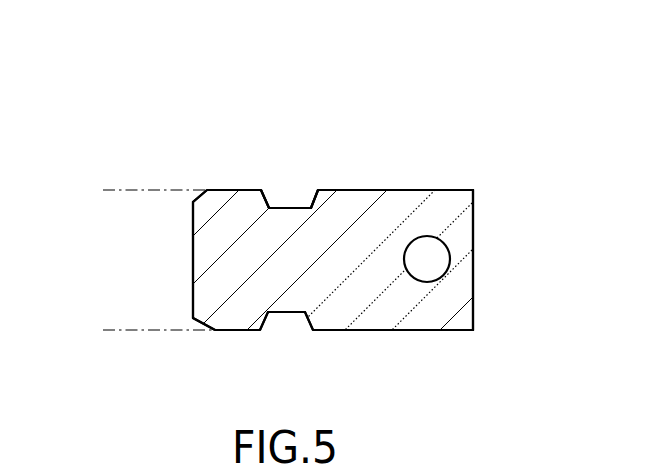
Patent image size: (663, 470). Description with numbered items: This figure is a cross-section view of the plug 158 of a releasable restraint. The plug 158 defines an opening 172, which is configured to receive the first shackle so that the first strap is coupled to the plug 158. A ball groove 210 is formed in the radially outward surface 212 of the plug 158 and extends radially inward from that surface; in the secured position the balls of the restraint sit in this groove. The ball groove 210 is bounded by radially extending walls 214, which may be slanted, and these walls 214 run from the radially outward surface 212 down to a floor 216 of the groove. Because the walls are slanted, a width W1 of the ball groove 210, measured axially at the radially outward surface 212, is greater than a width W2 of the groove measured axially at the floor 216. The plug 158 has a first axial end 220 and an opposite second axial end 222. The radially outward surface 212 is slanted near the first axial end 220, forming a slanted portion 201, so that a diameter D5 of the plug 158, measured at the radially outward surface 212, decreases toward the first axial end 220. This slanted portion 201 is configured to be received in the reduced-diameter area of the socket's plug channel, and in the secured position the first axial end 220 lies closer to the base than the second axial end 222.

The plug 158 is at (176, 97).
The ball groove 210 is at (282, 162).
The radially extending walls 214 is at (271, 192).
The floor 216 is at (283, 208).
The first axial end 220 is at (193, 237).
The radially outward surface 212 is at (425, 190).
The second axial end 222 is at (474, 225).
The opening 172 is at (458, 270).
The slanted portion 201 is at (217, 342).
The width of ball groove at radially outward surface W1 is at (313, 341).
The width of ball groove at floor W2 is at (305, 296).
The diameter of plug D5 is at (110, 203).